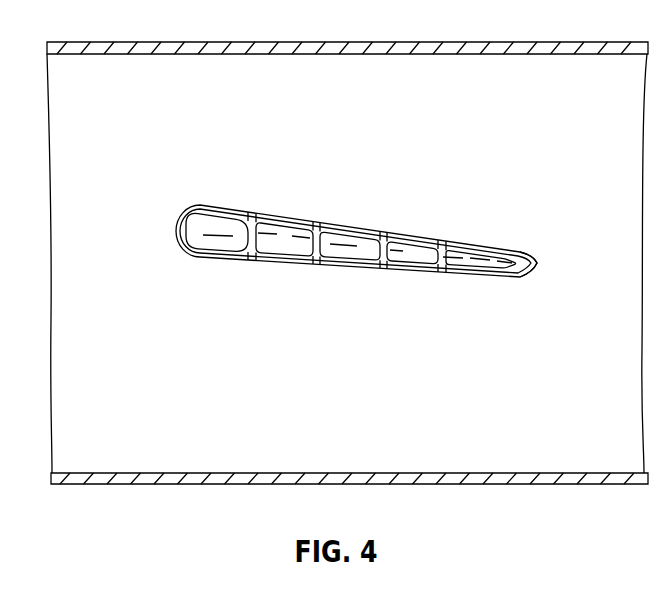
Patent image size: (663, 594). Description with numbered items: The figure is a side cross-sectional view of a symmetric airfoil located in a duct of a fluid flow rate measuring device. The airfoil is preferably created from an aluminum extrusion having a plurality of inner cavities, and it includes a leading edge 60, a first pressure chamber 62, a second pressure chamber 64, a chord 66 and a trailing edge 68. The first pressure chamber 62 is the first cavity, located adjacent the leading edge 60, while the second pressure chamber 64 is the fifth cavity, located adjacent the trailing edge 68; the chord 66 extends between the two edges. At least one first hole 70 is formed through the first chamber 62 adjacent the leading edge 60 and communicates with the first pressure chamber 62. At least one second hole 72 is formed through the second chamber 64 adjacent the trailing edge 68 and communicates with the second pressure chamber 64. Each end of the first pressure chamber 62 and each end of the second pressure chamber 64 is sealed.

The leading edge 60 is at (176, 224).
The first pressure chamber 62 is at (215, 240).
The second pressure chamber 64 is at (473, 250).
The chord 66 is at (275, 213).
The trailing edge 68 is at (537, 263).
The first hole 70 is at (228, 214).
The second hole 72 is at (478, 272).